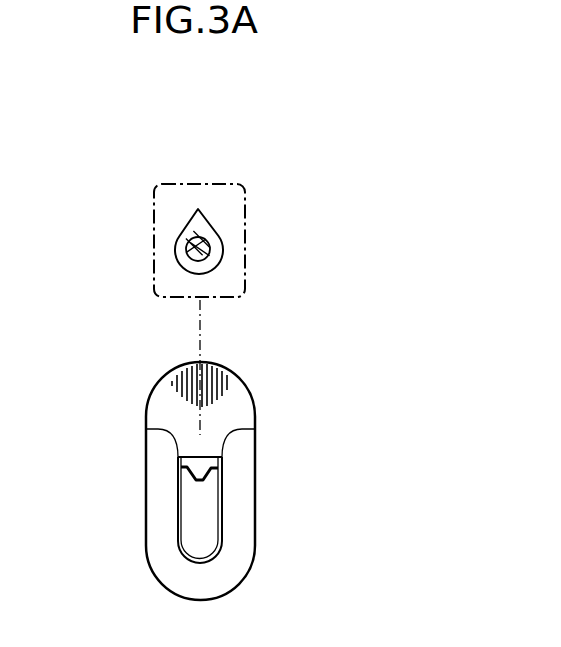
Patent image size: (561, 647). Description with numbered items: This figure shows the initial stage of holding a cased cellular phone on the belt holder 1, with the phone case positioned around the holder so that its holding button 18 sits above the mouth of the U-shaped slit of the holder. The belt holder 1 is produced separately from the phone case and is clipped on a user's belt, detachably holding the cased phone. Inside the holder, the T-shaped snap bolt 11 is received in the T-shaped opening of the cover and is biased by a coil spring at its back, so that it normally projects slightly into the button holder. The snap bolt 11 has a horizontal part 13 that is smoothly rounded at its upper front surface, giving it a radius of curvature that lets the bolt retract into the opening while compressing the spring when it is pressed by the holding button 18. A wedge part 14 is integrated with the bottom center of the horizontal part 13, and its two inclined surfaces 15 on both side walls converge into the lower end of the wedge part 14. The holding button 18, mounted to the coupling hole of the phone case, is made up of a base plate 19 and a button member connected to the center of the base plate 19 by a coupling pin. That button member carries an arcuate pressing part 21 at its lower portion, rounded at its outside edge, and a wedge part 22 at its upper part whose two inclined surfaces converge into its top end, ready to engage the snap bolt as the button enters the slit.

The belt holder 1 is at (263, 412).
The T-shaped snap bolt 11 is at (185, 436).
The horizontal part 13 is at (207, 461).
The wedge part 14 is at (199, 483).
The inclined surfaces 15 is at (193, 480).
The holding button 18 is at (174, 279).
The base plate 19 is at (233, 211).
The arcuate pressing part 21 is at (188, 259).
The wedge part 22 is at (216, 227).